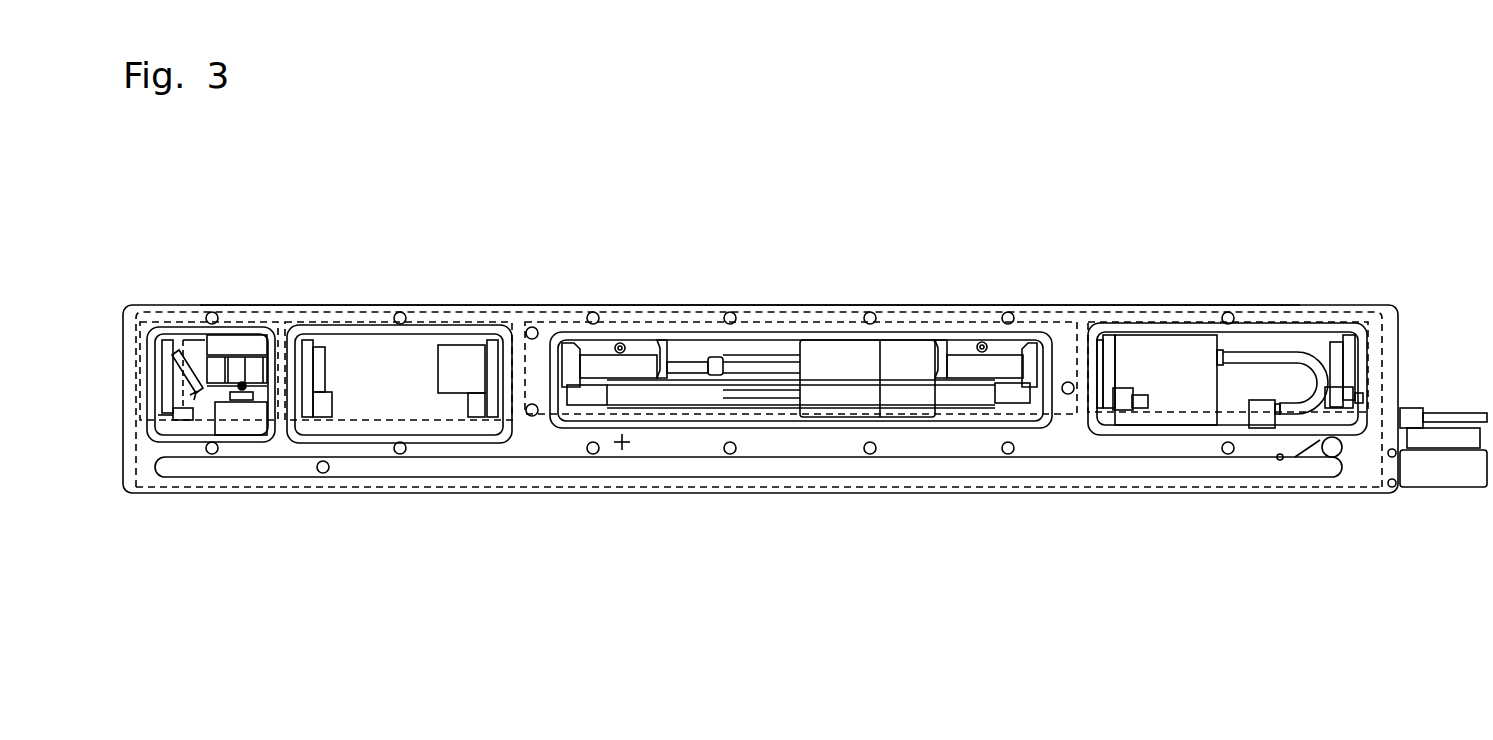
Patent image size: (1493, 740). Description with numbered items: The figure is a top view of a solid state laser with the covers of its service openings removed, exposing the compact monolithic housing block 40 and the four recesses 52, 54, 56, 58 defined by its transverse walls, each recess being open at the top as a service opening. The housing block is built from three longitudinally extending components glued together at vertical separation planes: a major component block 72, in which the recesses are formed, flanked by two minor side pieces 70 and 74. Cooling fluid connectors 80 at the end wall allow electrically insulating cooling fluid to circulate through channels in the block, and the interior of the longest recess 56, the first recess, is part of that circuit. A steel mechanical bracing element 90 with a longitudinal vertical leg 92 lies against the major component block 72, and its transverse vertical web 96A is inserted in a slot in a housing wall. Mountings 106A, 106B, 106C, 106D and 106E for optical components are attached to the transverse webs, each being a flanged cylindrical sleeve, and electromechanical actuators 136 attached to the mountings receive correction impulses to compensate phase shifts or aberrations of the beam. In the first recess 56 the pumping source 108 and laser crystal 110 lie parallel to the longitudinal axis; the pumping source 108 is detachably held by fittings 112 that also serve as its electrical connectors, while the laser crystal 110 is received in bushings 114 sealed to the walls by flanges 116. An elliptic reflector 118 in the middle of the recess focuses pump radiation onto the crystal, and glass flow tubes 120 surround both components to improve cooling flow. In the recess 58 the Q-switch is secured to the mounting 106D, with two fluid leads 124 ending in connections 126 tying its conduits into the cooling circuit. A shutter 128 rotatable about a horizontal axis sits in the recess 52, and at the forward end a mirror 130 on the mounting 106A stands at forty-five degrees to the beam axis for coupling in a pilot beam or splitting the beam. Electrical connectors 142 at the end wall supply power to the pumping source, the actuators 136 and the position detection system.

The monolithic housing block 40 is at (638, 490).
The recess 52 is at (223, 347).
The recess 54 is at (409, 360).
The first recess 56 is at (775, 413).
The recess 58 is at (1298, 340).
The minor side piece 70 is at (875, 482).
The major component block 72 is at (912, 440).
The minor side piece 74 is at (977, 305).
The cooling fluid connectors 80 is at (1413, 470).
The mechanical bracing element 90 is at (196, 322).
The longitudinal vertical leg 92 is at (607, 320).
The transverse vertical web 96A is at (138, 357).
The mounting 106A is at (165, 427).
The mounting 106B is at (307, 410).
The mounting 106C is at (492, 410).
The mounting 106D is at (1110, 408).
The mounting 106E is at (1348, 402).
The pumping source 108 is at (791, 385).
The laser crystal 110 is at (765, 367).
The fittings 112 is at (583, 400).
The bushings 114 is at (638, 362).
The flanges 116 is at (572, 365).
The elliptic reflector 118 is at (857, 358).
The flow tubes 120 is at (732, 377).
The fluid leads 124 is at (1267, 357).
The connections 126 is at (1262, 423).
The shutter 128 is at (255, 387).
The mirror 130 is at (193, 398).
The electromechanical actuators 136 is at (185, 412).
The electrical connectors 142 is at (1453, 418).